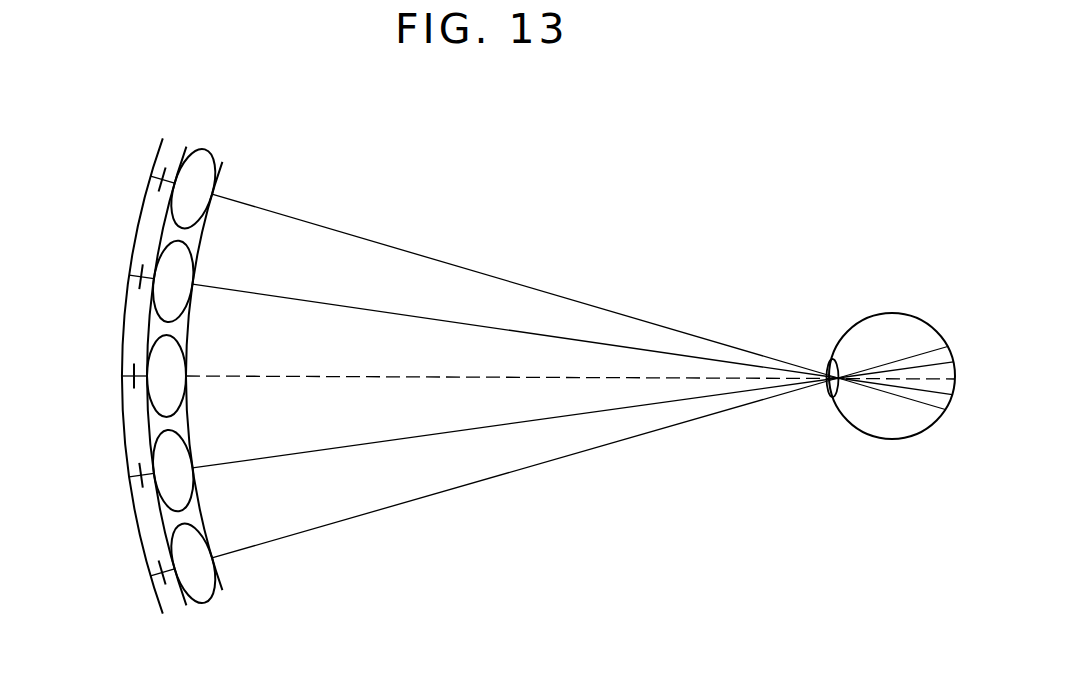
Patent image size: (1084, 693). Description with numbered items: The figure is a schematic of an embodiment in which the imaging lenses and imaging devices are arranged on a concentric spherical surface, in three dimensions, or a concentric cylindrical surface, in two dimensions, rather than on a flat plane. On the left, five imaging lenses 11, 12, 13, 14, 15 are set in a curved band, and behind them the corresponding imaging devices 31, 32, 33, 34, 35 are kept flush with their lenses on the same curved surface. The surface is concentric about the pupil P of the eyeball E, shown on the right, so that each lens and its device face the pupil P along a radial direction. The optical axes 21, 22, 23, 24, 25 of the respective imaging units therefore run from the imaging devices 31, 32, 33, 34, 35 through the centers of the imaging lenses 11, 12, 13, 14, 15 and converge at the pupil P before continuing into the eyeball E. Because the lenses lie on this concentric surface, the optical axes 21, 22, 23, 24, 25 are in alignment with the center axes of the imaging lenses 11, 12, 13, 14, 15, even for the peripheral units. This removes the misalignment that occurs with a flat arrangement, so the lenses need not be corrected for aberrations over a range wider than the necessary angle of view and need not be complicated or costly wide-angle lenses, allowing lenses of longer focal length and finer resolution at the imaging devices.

The imaging lens 11 is at (203, 148).
The imaging lens 12 is at (192, 243).
The imaging lens 13 is at (178, 338).
The imaging lens 14 is at (183, 428).
The imaging lens 15 is at (197, 517).
The optical axis 21 is at (340, 230).
The optical axis 22 is at (340, 303).
The optical axis 23 is at (340, 375).
The optical axis 24 is at (340, 447).
The optical axis 25 is at (340, 520).
The imaging device 31 is at (150, 176).
The imaging device 32 is at (130, 264).
The imaging device 33 is at (122, 364).
The imaging device 34 is at (128, 468).
The imaging device 35 is at (148, 562).
The eyeball E is at (885, 290).
The pupil P is at (814, 404).